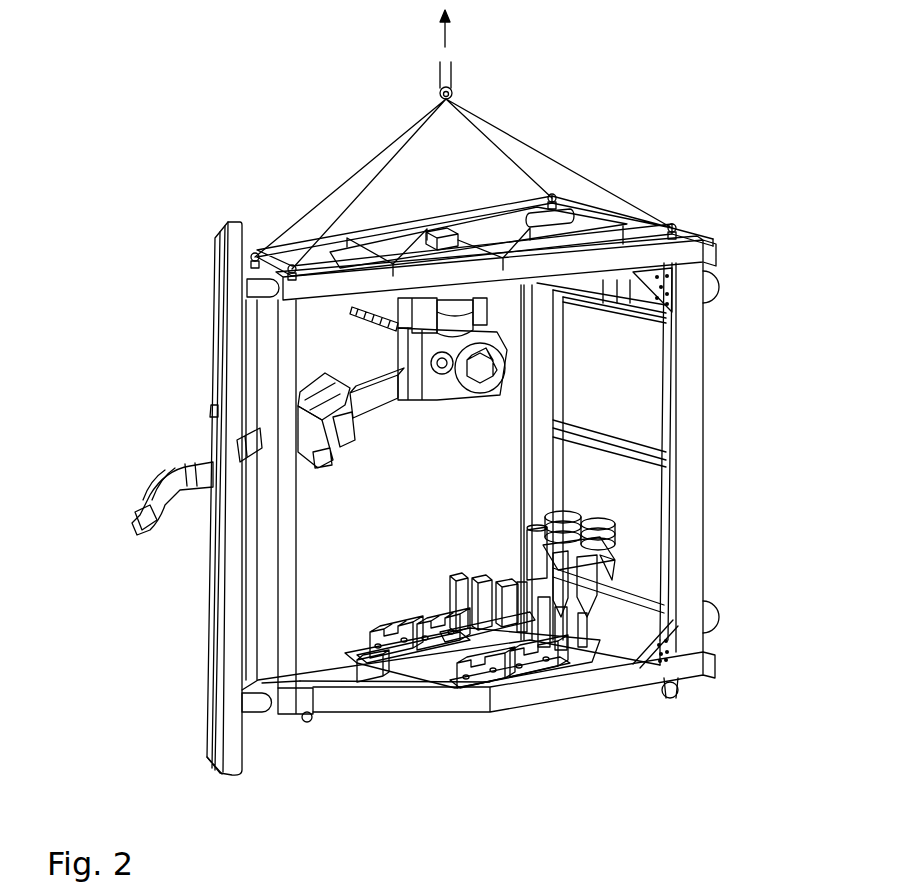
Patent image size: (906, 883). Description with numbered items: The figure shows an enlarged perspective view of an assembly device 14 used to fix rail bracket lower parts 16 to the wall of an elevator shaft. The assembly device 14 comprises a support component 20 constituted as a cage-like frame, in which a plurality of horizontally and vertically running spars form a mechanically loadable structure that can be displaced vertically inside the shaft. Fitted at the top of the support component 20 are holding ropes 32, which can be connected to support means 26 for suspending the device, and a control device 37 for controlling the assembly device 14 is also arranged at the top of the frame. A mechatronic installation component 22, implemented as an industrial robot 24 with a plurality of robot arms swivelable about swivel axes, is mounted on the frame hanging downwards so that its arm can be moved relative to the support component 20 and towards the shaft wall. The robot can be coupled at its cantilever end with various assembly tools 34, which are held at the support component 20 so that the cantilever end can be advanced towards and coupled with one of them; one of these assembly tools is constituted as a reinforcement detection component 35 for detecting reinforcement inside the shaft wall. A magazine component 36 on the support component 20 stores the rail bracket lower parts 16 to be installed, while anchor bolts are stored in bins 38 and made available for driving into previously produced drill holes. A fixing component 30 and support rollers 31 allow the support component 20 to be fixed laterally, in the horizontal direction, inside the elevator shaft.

The assembly device 14 is at (243, 180).
The rail bracket lower parts 16 is at (460, 578).
The support component 20 is at (693, 253).
The mechatronic installation component 22 is at (336, 363).
The industrial robot 24 is at (303, 387).
The support means 26 is at (455, 78).
The fixing component 30 is at (218, 658).
The support rollers 31 is at (716, 618).
The holding ropes 32 is at (598, 186).
The assembly tools 34 is at (540, 517).
The reinforcement detection component 35 is at (365, 647).
The magazine component 36 is at (430, 592).
The control device 37 is at (438, 227).
The bins 38 is at (390, 623).